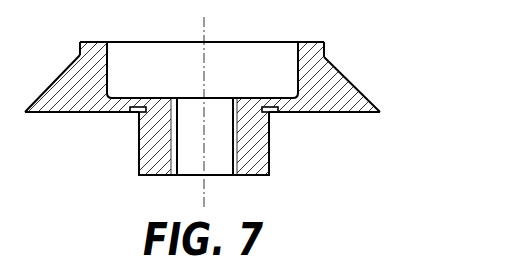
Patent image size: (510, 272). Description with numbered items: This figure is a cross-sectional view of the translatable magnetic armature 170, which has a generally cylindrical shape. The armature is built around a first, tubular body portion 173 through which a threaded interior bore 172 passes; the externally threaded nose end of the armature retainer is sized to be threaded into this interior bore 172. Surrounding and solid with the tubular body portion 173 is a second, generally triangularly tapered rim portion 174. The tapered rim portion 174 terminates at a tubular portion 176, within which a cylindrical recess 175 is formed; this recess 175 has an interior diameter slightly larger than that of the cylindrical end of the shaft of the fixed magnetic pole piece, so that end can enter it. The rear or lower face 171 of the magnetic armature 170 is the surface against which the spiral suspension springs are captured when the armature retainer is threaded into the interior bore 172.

The magnetic armature 170 is at (288, 158).
The lower face 171 is at (354, 114).
The interior bore 172 is at (234, 157).
The tubular body portion 173 is at (139, 162).
The tapered rim portion 174 is at (352, 85).
The cylindrical recess 175 is at (108, 66).
The tubular portion 176 is at (325, 53).